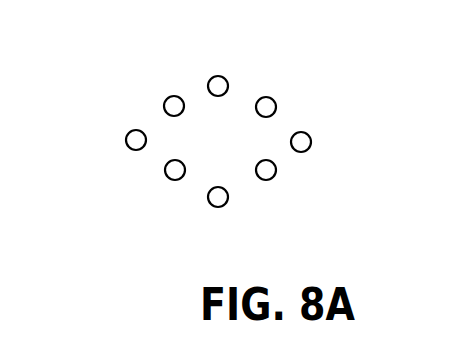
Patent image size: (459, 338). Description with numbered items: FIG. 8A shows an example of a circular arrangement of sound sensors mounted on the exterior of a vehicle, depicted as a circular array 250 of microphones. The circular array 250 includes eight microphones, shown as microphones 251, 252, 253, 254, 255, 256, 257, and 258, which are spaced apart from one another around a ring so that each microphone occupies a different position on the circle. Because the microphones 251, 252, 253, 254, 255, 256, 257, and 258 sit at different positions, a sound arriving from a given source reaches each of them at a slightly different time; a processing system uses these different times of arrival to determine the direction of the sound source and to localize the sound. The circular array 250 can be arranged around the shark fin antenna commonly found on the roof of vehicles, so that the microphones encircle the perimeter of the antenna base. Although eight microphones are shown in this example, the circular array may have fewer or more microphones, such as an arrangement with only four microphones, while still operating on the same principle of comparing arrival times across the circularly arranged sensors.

The circular array 250 is at (304, 63).
The microphone 251 is at (210, 77).
The microphone 252 is at (164, 103).
The microphone 253 is at (126, 140).
The microphone 254 is at (167, 176).
The microphone 255 is at (211, 205).
The microphone 256 is at (269, 180).
The microphone 257 is at (309, 150).
The microphone 258 is at (276, 108).